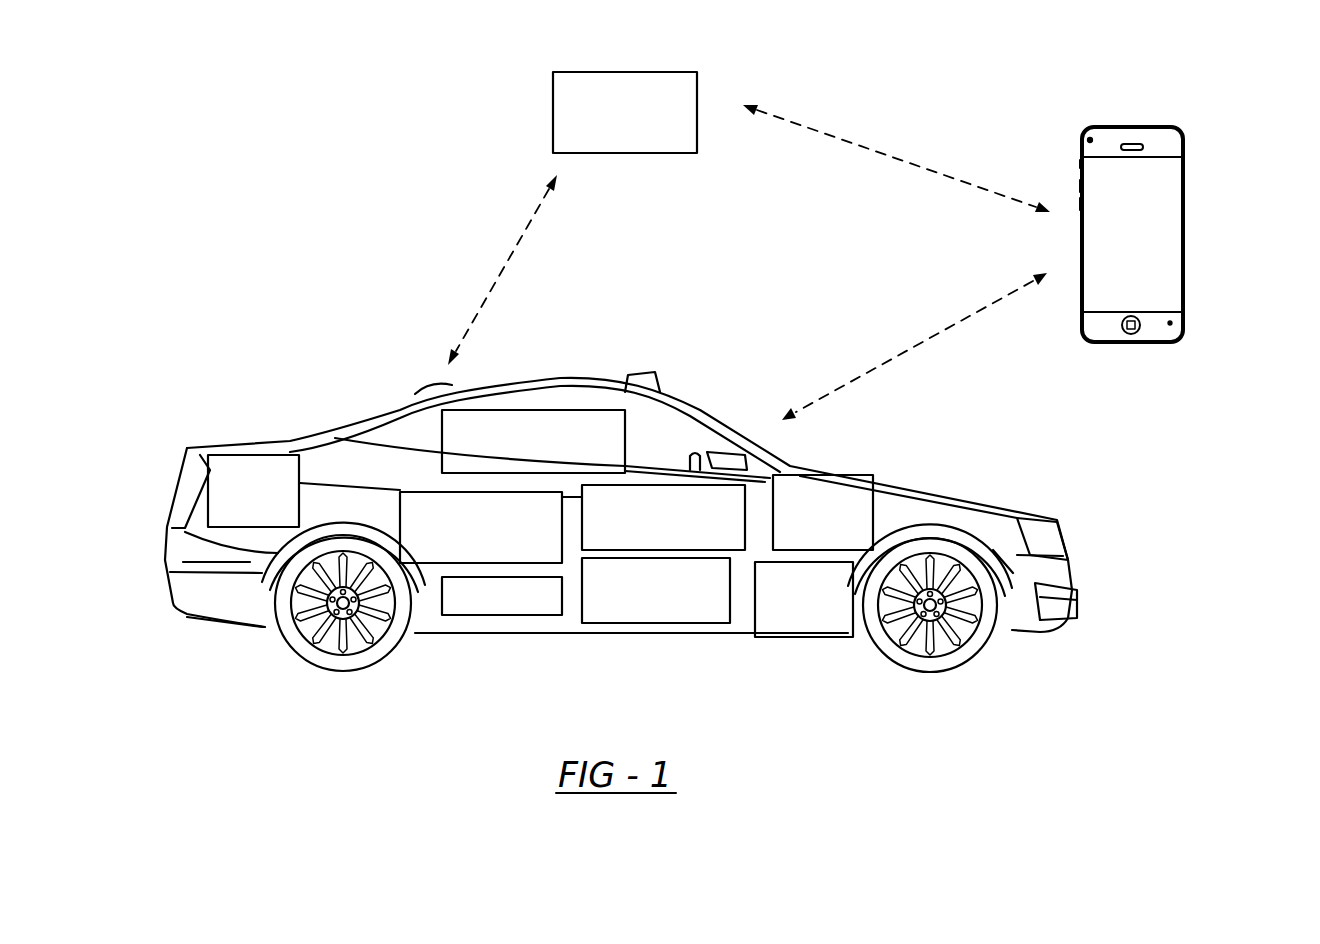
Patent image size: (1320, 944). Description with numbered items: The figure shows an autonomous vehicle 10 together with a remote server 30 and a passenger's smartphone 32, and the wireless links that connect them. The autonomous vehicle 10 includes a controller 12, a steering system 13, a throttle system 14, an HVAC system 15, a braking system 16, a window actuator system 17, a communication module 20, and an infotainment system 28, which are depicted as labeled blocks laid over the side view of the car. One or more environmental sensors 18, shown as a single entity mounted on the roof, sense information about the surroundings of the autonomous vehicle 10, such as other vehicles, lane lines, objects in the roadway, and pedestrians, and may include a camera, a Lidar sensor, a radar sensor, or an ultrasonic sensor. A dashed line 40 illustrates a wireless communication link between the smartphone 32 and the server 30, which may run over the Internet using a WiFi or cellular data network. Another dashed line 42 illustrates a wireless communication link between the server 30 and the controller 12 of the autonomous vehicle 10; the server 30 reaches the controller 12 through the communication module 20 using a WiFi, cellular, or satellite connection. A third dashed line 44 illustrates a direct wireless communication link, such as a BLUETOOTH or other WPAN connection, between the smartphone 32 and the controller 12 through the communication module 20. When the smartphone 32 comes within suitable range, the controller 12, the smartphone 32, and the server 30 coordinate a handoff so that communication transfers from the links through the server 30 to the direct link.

The autonomous vehicle 10 is at (279, 238).
The controller 12 is at (520, 615).
The steering system 13 is at (873, 512).
The throttle system 14 is at (838, 637).
The HVAC system 15 is at (682, 623).
The braking system 16 is at (285, 455).
The window actuator system 17 is at (577, 410).
The environmental sensors 18 is at (641, 375).
The communication module 20 is at (672, 485).
The infotainment system 28 is at (400, 512).
The server 30 is at (553, 102).
The smartphone 32 is at (1178, 233).
The wireless communication link 40 is at (852, 142).
The wireless communication link 42 is at (518, 247).
The wireless communication link 44 is at (948, 327).